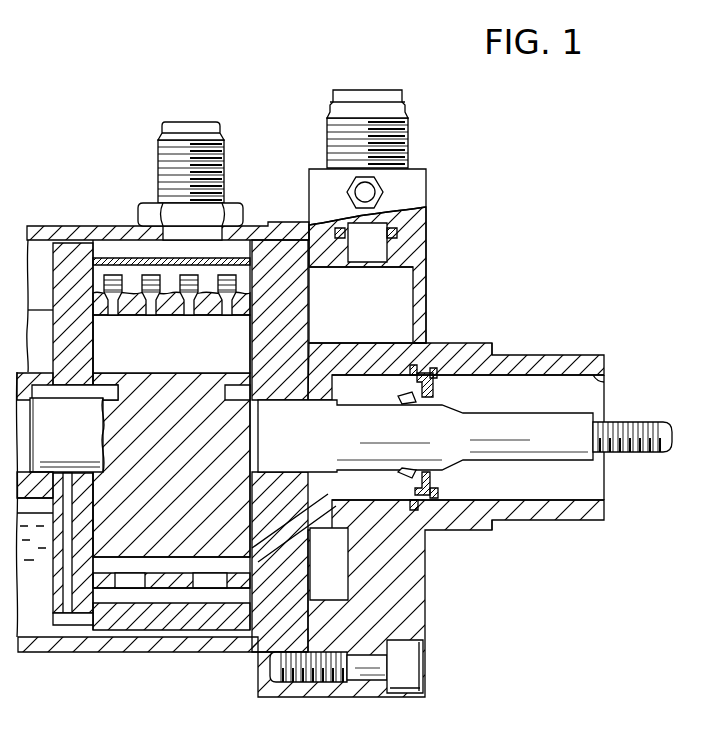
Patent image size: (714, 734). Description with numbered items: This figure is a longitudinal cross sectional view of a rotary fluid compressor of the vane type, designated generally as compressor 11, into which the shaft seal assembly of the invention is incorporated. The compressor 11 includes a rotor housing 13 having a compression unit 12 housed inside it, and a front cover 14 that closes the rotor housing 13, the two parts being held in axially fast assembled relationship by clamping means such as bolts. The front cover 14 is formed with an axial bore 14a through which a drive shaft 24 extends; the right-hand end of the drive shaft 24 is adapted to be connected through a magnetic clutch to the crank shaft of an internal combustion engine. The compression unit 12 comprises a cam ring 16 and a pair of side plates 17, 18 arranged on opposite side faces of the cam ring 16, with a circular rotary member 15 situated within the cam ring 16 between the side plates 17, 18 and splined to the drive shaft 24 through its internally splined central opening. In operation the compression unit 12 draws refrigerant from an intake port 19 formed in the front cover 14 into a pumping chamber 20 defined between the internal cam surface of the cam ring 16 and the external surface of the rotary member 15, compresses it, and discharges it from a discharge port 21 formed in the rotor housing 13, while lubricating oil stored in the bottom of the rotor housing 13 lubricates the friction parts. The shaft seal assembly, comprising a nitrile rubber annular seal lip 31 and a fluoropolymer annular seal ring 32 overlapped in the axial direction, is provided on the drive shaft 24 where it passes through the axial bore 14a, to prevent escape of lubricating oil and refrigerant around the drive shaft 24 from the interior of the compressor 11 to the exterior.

The compressor 11 is at (446, 240).
The compression unit 12 is at (114, 254).
The rotor housing 13 is at (288, 224).
The front cover 14 is at (479, 349).
The axial bore 14a is at (597, 380).
The rotary member 15 is at (183, 503).
The cam ring 16 is at (168, 622).
The side plate 17 is at (62, 588).
The side plate 18 is at (304, 570).
The intake port 19 is at (384, 262).
The pumping chamber 20 is at (186, 565).
The discharge port 21 is at (214, 122).
The drive shaft 24 is at (380, 466).
The annular seal lip 31 is at (465, 436).
The annular seal ring 32 is at (420, 403).